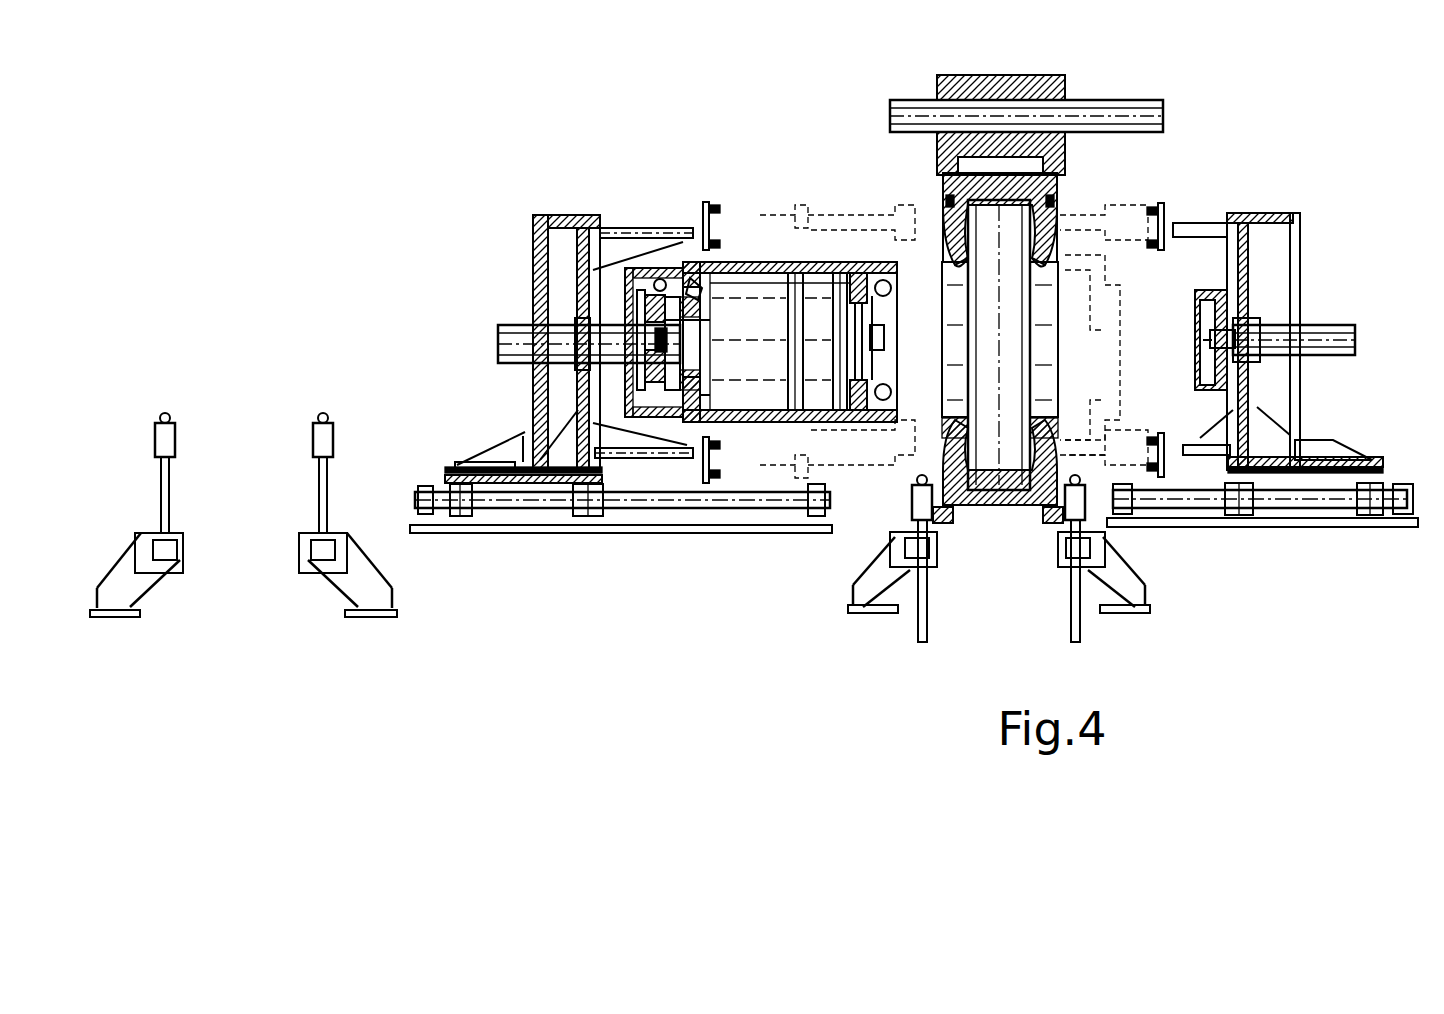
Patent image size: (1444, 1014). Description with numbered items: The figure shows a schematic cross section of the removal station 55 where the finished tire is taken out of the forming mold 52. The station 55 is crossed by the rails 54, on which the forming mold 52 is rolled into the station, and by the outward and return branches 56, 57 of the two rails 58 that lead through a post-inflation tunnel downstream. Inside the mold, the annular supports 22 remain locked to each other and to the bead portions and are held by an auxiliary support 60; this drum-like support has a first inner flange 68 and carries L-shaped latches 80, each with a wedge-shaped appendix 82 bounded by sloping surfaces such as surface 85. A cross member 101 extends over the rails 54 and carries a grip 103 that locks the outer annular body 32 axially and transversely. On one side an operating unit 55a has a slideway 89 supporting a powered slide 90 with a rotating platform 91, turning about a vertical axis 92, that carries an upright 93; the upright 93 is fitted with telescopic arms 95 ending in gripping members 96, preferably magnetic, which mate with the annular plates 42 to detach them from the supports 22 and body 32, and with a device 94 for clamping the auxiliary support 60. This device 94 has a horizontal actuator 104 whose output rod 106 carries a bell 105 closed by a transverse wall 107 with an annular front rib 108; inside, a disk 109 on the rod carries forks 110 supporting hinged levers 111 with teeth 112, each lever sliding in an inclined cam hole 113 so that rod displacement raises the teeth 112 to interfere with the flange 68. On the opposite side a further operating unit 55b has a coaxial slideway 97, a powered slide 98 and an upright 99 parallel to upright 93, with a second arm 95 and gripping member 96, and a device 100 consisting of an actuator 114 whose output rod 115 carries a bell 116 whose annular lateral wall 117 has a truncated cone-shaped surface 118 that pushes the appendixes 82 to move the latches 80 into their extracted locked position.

The annular support 22 is at (945, 320).
The outer annular body 32 is at (990, 185).
The annular plate 42 is at (946, 205).
The forming mold 52 is at (1062, 180).
The rail 54 is at (945, 520).
The station 55 is at (843, 142).
The operating unit 55a is at (510, 308).
The further operating unit 55b is at (1310, 305).
The outward branch 56 is at (900, 510).
The return branch 57 is at (345, 440).
The rail 58 is at (165, 413).
The auxiliary support 60 is at (815, 250).
The first inner flange 68 is at (738, 422).
The latch 80 is at (858, 273).
The appendix 82 is at (890, 288).
The surface 85 is at (885, 305).
The slideway 89 is at (745, 510).
The powered slide 90 is at (548, 485).
The platform 91 is at (455, 463).
The pivot axis 92 is at (520, 438).
The upright 93 is at (540, 290).
The device 94 is at (662, 420).
The telescopic arm 95 is at (630, 228).
The gripping member 96 is at (705, 202).
The slideway 97 is at (1288, 508).
The powered slide 98 is at (1378, 470).
The upright 99 is at (1282, 385).
The device 100 is at (1235, 305).
The cross member 101 is at (1103, 118).
The grip 103 is at (1040, 88).
The actuator 104 is at (515, 345).
The bell 105 is at (575, 270).
The output rod 106 is at (652, 400).
The transverse wall 107 is at (700, 320).
The annular front rib 108 is at (700, 262).
The disk 109 is at (700, 395).
The fork 110 is at (640, 290).
The hinged lever 111 is at (670, 297).
The tooth 112 is at (705, 290).
The inclined cam hole 113 is at (675, 292).
The actuator 114 is at (1318, 338).
The output rod 115 is at (1205, 325).
The bell 116 is at (1225, 355).
The annular lateral wall 117 is at (1210, 350).
The truncated cone-shaped surface 118 is at (1208, 292).